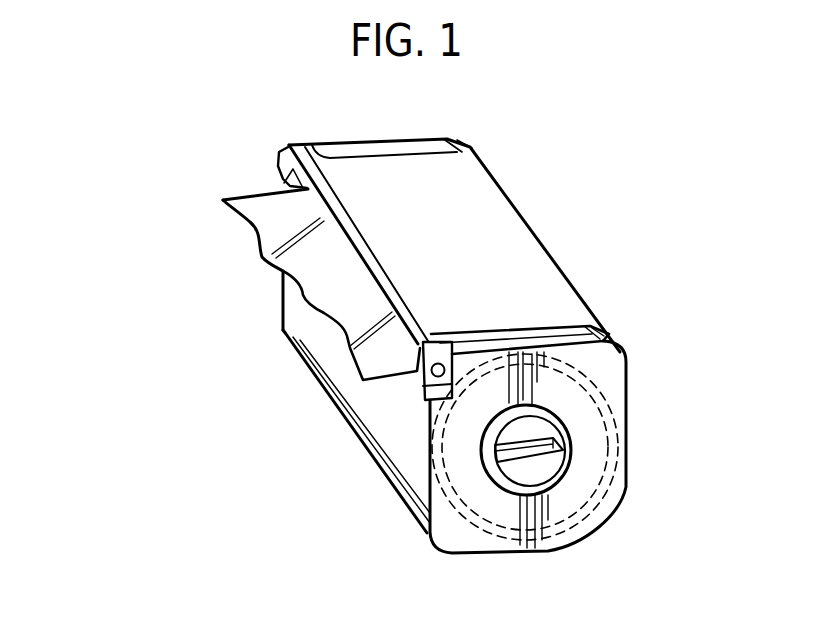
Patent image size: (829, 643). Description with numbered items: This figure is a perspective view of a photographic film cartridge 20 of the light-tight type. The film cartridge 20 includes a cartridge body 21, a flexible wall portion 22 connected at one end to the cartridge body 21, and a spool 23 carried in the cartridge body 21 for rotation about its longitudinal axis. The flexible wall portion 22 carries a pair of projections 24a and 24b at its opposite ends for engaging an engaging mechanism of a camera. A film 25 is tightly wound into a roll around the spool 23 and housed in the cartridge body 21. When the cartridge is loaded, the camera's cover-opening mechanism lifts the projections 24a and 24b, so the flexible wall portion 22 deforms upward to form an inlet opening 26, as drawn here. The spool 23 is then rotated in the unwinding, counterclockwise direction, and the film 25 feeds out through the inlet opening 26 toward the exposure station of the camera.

The film cartridge 20 is at (496, 166).
The cartridge body 21 is at (417, 480).
The flexible wall portion 22 is at (507, 240).
The spool 23 is at (537, 470).
The projection 24a is at (449, 346).
The projection 24b is at (279, 157).
The film 25 is at (273, 260).
The inlet opening 26 is at (305, 207).